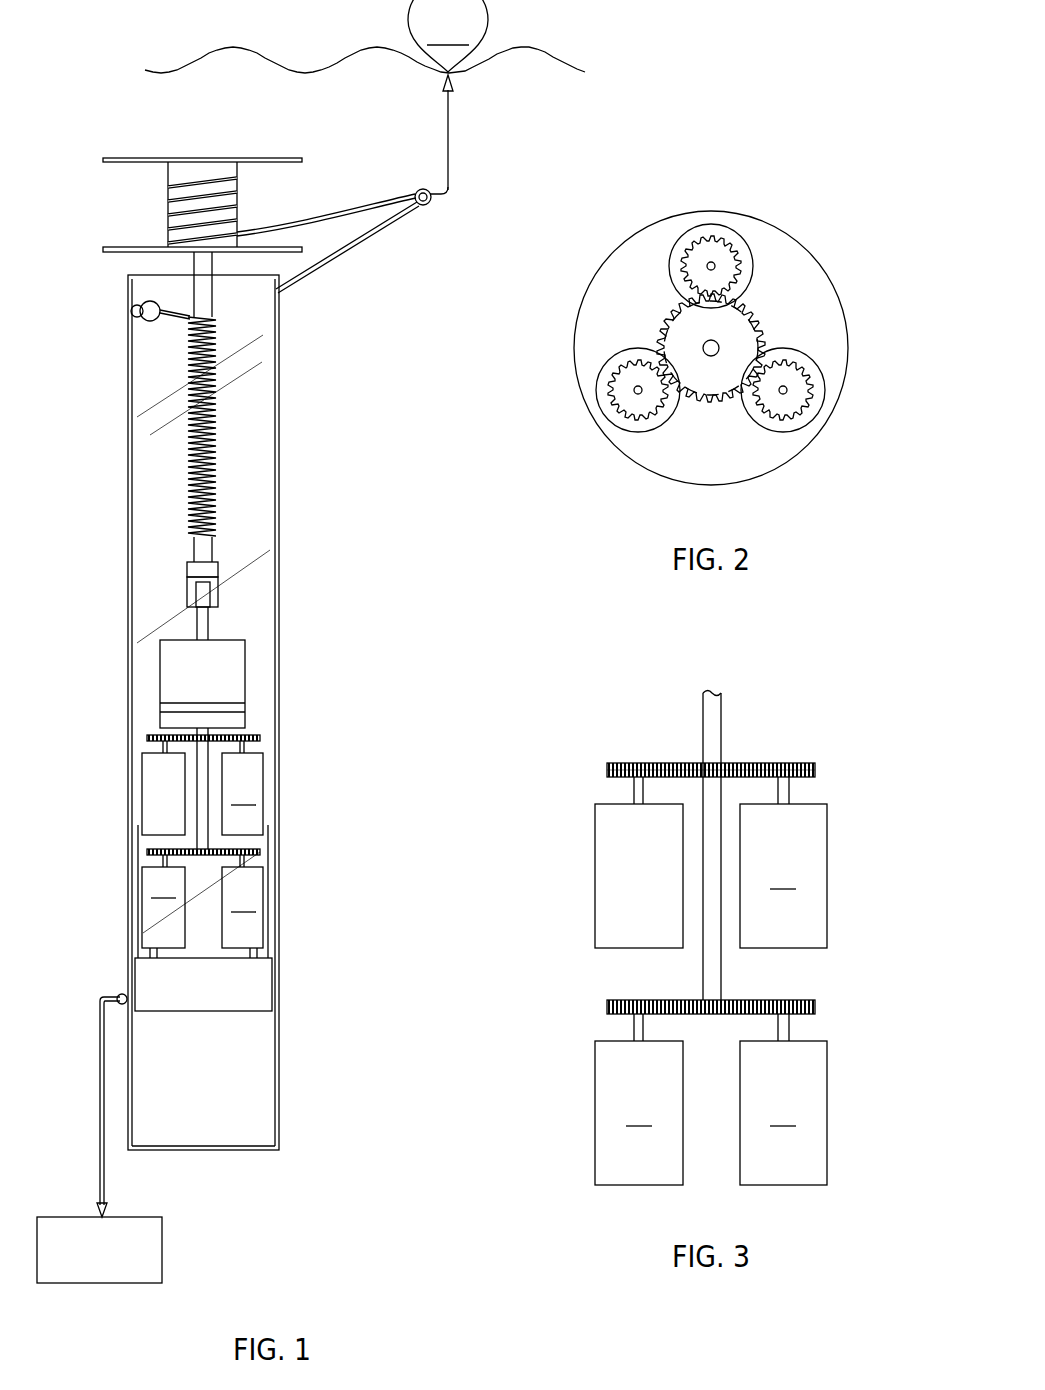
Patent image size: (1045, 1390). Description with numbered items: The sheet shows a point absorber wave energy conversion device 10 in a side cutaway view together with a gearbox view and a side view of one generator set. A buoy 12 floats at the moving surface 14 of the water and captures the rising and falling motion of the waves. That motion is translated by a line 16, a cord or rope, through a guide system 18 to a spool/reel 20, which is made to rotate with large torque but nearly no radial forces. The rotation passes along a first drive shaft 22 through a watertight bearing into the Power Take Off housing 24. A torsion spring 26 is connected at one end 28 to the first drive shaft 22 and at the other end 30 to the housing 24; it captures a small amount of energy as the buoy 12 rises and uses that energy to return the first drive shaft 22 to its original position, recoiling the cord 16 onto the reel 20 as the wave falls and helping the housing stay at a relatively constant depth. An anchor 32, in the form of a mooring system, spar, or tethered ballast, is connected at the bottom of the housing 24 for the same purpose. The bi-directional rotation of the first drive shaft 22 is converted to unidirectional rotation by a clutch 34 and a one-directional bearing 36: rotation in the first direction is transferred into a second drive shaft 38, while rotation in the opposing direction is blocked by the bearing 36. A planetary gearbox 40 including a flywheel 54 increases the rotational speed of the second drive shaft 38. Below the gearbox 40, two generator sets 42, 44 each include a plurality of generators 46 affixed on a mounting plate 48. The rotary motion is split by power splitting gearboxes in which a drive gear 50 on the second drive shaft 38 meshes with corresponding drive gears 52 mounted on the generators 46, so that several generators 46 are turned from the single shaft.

In FIG. 1, the wave energy conversion device 10 is at (330, 419).
In FIG. 1, the buoy 12 is at (461, 27).
In FIG. 1, the surface of the water 14 is at (540, 54).
In FIG. 1, the line 16 is at (452, 134).
In FIG. 1, the guide system 18 is at (355, 240).
In FIG. 1, the spool/reel 20 is at (203, 158).
In FIG. 1, the first drive shaft 22 is at (205, 288).
In FIG. 1, the Power Take Off housing 24 is at (280, 534).
In FIG. 1, the torsion spring 26 is at (186, 402).
In FIG. 1, the end of torsion spring 28 is at (190, 537).
In FIG. 1, the other end of torsion spring 30 is at (140, 312).
In FIG. 1, the anchor 32 is at (112, 1261).
In FIG. 1, the clutch 34 is at (188, 570).
In FIG. 1, the one-directional bearing 36 is at (207, 594).
In FIG. 1, the second drive shaft 38 is at (200, 625).
In FIG. 2, the second drive shaft 38 is at (720, 348).
In FIG. 3, the second drive shaft 38 is at (713, 727).
In FIG. 1, the planetary gearbox 40 is at (168, 707).
In FIG. 1, the first generator set 42 is at (267, 785).
In FIG. 3, the first generator set 42 is at (758, 855).
In FIG. 1, the second generator set 44 is at (320, 901).
In FIG. 3, the second generator set 44 is at (862, 1000).
In FIG. 1, the generator 46 is at (176, 805).
In FIG. 3, the generator 46 is at (652, 889).
In FIG. 2, the mounting plate 48 is at (830, 337).
In FIG. 2, the drive gear 50 is at (683, 326).
In FIG. 3, the drive gear 50 is at (685, 762).
In FIG. 2, the drive gears 52 is at (718, 245).
In FIG. 3, the drive gears 52 is at (624, 762).
In FIG. 1, the flywheel 54 is at (246, 680).